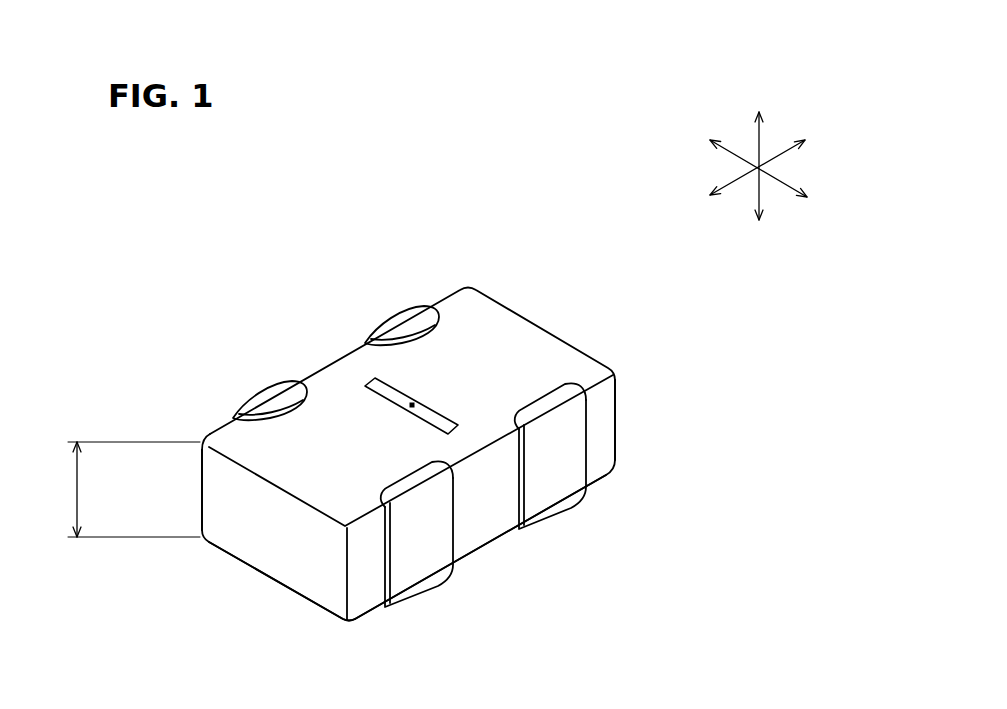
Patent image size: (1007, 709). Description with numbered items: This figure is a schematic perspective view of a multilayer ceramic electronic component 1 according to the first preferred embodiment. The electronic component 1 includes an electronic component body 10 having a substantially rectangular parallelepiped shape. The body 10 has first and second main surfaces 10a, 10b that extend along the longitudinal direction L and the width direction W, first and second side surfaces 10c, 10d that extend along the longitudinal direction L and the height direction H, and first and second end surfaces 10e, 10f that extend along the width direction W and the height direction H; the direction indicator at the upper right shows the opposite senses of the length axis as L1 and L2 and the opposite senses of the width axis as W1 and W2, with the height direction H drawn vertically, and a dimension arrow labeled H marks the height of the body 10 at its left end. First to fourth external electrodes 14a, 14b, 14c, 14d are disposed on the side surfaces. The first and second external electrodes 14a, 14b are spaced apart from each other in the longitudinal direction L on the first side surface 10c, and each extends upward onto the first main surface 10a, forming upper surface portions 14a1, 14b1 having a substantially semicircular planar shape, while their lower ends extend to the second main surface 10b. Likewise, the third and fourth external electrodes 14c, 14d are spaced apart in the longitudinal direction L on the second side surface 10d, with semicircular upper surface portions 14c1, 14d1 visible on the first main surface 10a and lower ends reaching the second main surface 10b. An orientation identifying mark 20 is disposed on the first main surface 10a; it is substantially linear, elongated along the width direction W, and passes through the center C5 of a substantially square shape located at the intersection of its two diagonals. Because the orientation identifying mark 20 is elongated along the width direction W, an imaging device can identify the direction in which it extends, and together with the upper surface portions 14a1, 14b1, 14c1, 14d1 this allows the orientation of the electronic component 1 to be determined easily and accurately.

The electronic component 1 is at (478, 248).
The electronic component body 10 is at (520, 315).
The first main surface 10a is at (552, 358).
The second main surface 10b is at (292, 593).
The first side surface 10c is at (602, 430).
The second side surface 10d is at (200, 497).
The first end surface 10e is at (240, 528).
The second end surface 10f is at (617, 397).
The first external electrode 14a is at (492, 553).
The upper surface portion 14a1 is at (403, 482).
The second external electrode 14b is at (623, 469).
The upper surface portion 14b1 is at (540, 405).
The third external electrode 14c is at (221, 356).
The upper surface portion 14c1 is at (260, 405).
The fourth external electrode 14d is at (374, 268).
The upper surface portion 14d1 is at (407, 323).
The orientation identifying mark 20 is at (365, 383).
The center C5 is at (412, 405).
The height direction H is at (757, 130).
The longitudinal direction L is at (757, 149).
The first longitudinal direction L1 is at (699, 201).
The second longitudinal direction L2 is at (793, 105).
The width direction W is at (773, 167).
The first width direction W1 is at (695, 132).
The second width direction W2 is at (788, 183).